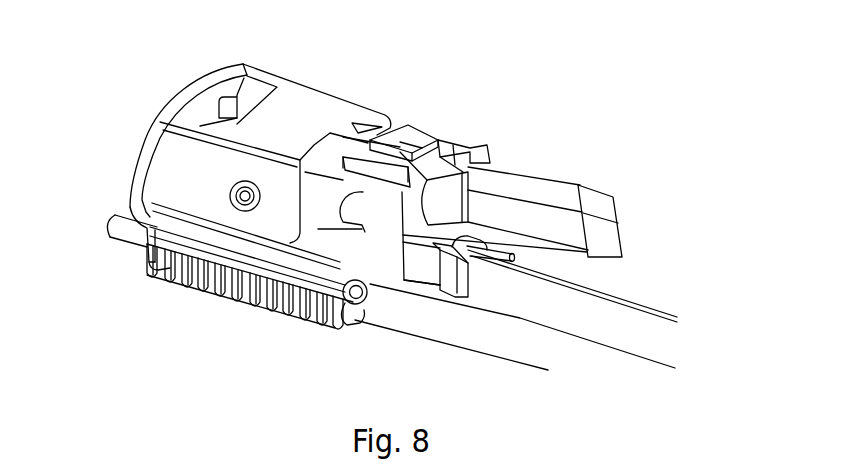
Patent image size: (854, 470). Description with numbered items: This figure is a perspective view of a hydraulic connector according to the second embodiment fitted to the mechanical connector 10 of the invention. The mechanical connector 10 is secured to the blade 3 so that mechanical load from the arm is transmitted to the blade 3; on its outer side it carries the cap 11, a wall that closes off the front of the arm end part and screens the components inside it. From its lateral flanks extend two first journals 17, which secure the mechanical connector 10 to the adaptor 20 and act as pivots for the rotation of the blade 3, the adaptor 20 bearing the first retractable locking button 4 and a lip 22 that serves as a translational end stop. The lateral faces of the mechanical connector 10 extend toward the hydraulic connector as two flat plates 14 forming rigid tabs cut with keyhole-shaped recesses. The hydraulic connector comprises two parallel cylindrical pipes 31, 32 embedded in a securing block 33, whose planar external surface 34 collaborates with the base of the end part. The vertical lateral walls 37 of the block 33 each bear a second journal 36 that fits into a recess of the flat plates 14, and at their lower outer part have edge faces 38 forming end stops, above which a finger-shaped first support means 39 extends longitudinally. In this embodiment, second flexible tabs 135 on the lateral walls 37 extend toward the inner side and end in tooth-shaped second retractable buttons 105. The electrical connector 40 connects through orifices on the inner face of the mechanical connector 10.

The blade 3 is at (637, 325).
The first retractable locking button 4 is at (407, 135).
The mechanical connector 10 is at (155, 232).
The cap 11 is at (140, 152).
The flat plates 14 is at (303, 245).
The first journals 17 is at (226, 205).
The adaptor 20 is at (293, 120).
The lip 22 is at (153, 263).
The pipe 31 is at (600, 190).
The pipe 32 is at (613, 258).
The securing block 33 is at (490, 160).
The external surface 34 is at (457, 140).
The second journals 36 is at (344, 197).
The lateral walls 37 is at (390, 275).
The edge faces 38 is at (360, 310).
The first support means 39 is at (340, 260).
The electrical connector 40 is at (517, 256).
The second retractable buttons 105 is at (457, 283).
The second flexible tabs 135 is at (421, 270).